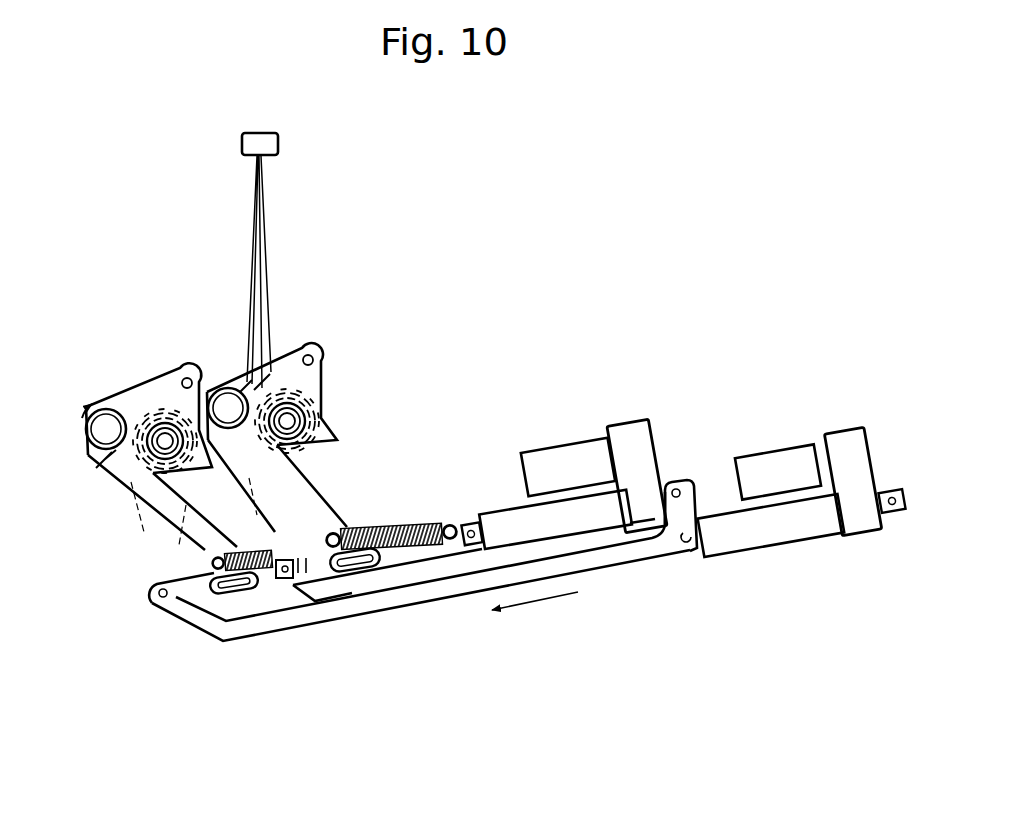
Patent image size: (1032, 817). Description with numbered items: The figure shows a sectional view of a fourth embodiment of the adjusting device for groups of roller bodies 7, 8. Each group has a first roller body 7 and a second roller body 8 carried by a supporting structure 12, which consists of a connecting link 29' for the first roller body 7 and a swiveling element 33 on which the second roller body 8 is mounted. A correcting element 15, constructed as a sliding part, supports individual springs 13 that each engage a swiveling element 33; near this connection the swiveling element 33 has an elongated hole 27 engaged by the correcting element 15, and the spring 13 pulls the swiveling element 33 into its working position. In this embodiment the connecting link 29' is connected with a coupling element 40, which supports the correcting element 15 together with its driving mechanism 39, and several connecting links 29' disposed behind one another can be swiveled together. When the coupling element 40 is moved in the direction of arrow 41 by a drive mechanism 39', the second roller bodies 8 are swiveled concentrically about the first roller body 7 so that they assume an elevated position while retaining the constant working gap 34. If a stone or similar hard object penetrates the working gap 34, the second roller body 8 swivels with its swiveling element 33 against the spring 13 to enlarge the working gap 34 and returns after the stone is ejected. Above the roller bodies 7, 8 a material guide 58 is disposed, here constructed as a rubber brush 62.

The first roller body 7 is at (152, 406).
The second roller body 8 is at (103, 422).
The supporting structure 12 is at (345, 504).
The spring 13 is at (419, 528).
The correcting element 15 is at (403, 588).
The elongated hole 27 is at (233, 590).
The connecting link 29' is at (244, 481).
The swiveling element 33 is at (168, 522).
The working gap 34 is at (125, 448).
The driving mechanism 39 is at (594, 447).
The drive mechanism 39' is at (820, 449).
The coupling element 40 is at (290, 618).
The arrow 41 is at (548, 600).
The material guide 58 is at (287, 163).
The rubber brush 62 is at (265, 232).